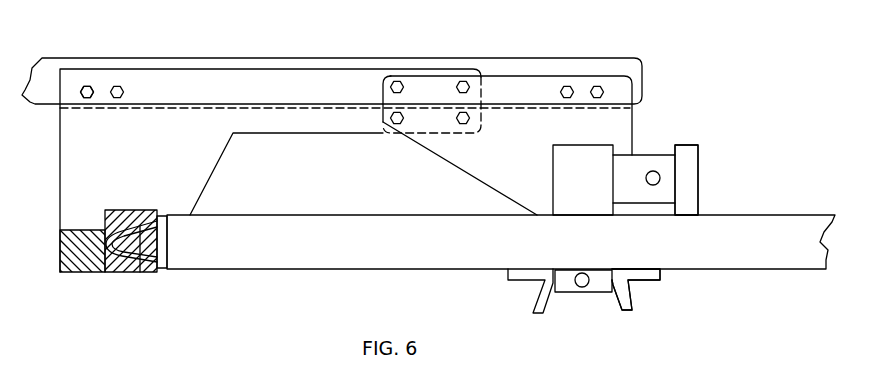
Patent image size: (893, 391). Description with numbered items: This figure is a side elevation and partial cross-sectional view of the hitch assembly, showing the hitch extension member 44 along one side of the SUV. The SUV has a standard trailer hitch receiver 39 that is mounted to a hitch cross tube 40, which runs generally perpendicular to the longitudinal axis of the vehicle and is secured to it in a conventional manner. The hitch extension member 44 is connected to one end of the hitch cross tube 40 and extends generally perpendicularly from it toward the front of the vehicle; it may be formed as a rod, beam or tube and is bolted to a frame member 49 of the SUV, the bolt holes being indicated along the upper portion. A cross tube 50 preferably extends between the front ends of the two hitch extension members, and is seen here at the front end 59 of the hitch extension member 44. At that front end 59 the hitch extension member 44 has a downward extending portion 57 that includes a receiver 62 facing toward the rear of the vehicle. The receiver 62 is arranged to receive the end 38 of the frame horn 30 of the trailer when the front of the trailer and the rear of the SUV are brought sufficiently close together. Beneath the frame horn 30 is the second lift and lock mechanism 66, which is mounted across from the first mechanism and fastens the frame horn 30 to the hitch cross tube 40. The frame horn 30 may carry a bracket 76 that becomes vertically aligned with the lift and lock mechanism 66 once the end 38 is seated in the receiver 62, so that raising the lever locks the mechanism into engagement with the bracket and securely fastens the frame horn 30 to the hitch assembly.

The frame horn 30 is at (245, 272).
The end of frame horn 38 is at (153, 262).
The trailer hitch receiver 39 is at (700, 167).
The hitch cross tube 40 is at (553, 175).
The hitch extension member 44 is at (234, 69).
The frame member 49 is at (160, 58).
The cross tube 50 is at (83, 272).
The downward extending portion 57 is at (218, 163).
The front end of hitch extension member 59 is at (90, 69).
The receiver 62 is at (140, 272).
The second lift and lock mechanism 66 is at (572, 292).
The bracket 76 is at (655, 316).